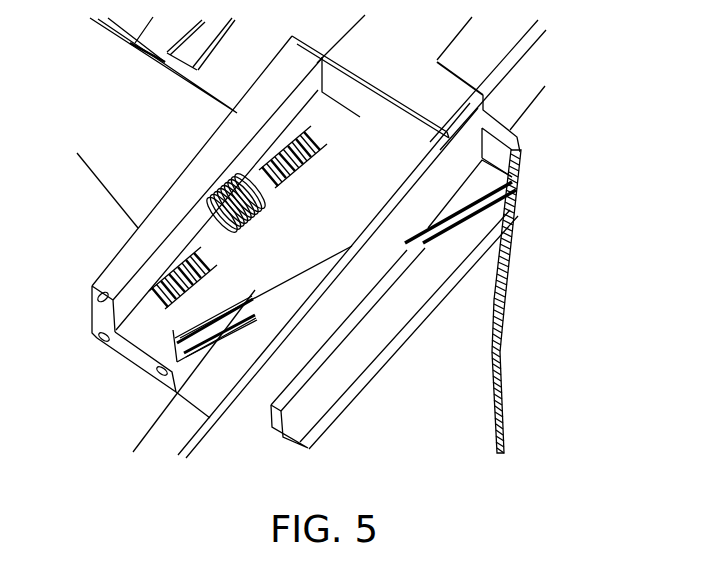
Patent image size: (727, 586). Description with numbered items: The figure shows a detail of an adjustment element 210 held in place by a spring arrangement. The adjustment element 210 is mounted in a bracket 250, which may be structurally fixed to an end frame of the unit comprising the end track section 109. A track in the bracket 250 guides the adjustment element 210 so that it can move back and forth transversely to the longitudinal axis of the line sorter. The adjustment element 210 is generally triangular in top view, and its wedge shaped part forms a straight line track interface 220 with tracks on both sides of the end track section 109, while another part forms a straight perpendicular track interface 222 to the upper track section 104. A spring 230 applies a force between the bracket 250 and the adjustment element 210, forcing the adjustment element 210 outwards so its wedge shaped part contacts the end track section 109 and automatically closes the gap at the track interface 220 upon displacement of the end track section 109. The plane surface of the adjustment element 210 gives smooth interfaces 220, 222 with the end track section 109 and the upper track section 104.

The upper track section 104 is at (452, 122).
The end track section 109 is at (223, 373).
The adjustment element 210 is at (360, 210).
The straight line track interface 220 is at (292, 274).
The straight perpendicular track interface 222 is at (423, 138).
The spring 230 is at (230, 200).
The bracket 250 is at (227, 147).